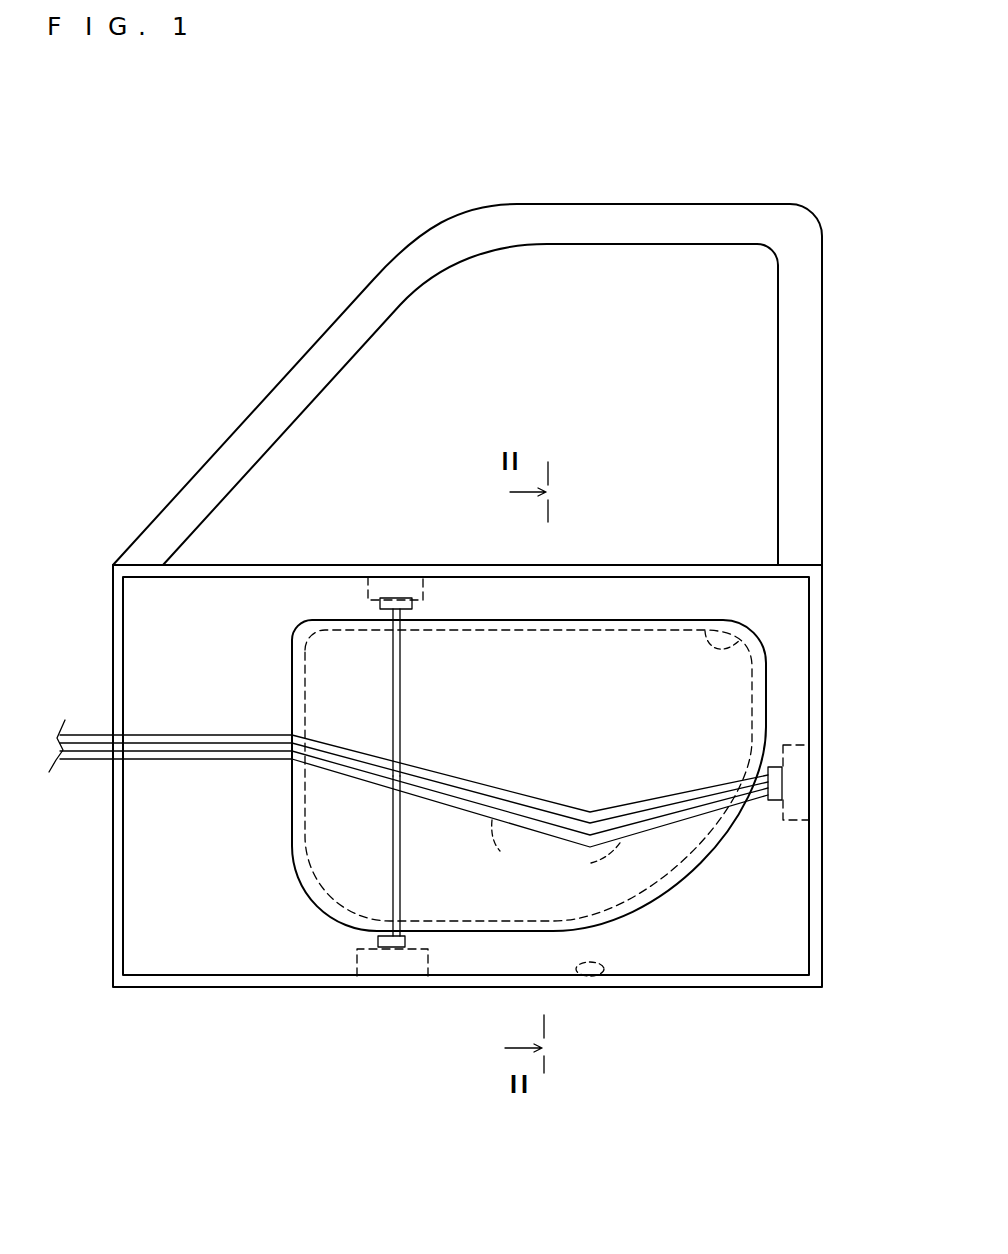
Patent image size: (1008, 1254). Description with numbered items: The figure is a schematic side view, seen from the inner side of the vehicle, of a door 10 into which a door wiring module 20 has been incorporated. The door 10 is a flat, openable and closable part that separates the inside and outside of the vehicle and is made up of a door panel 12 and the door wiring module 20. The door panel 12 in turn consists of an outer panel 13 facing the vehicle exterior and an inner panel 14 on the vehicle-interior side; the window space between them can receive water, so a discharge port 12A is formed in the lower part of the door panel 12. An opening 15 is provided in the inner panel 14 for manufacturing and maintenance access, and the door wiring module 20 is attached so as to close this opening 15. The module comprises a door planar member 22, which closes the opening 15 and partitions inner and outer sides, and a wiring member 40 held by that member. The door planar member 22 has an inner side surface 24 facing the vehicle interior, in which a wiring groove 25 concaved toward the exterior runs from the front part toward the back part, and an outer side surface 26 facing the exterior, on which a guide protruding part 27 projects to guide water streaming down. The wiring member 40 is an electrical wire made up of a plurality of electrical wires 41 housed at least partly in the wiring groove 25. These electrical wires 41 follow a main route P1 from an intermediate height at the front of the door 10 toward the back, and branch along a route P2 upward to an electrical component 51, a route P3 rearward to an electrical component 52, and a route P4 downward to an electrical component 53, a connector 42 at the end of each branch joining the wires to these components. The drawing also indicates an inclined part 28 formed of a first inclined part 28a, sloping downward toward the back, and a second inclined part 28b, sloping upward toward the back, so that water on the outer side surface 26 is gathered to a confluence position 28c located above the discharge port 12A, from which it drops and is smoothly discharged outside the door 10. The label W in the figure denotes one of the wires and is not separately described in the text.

The door 10 is at (680, 182).
The door panel 12 is at (783, 1038).
The discharge port 12A is at (607, 963).
The outer panel 13 is at (765, 953).
The inner panel 14 is at (708, 963).
The opening 15 is at (757, 630).
The door wiring module 20 is at (682, 559).
The door planar member 22 is at (557, 645).
The inner side surface 24 is at (655, 710).
The wiring groove 25 is at (441, 773).
The outer side surface 26 is at (701, 866).
The guide protruding part 27 is at (528, 797).
The inclined part 28 is at (590, 876).
The first inclined part 28a is at (499, 849).
The second inclined part 28b is at (586, 859).
The confluence position 28c is at (576, 806).
The wiring member 40 is at (230, 724).
The electrical wires 41 is at (357, 772).
The connector 42 is at (413, 606).
The electrical component 51 is at (365, 588).
The electrical component 52 is at (797, 821).
The electrical component 53 is at (356, 961).
The main route P1 is at (179, 735).
The route P2 is at (402, 660).
The route P3 is at (485, 797).
The route P4 is at (402, 892).
The wire W is at (420, 699).